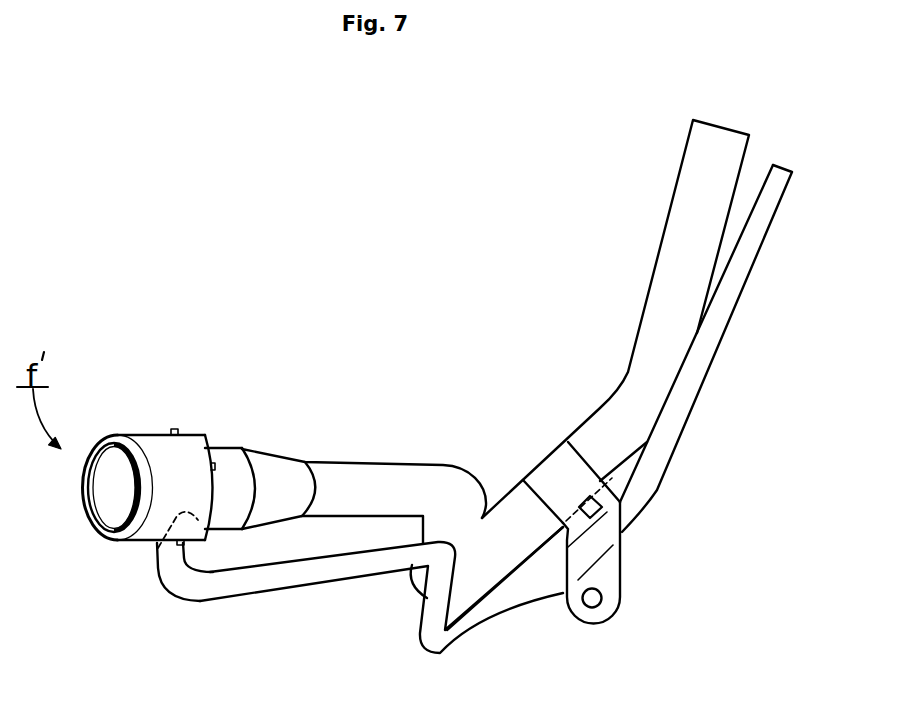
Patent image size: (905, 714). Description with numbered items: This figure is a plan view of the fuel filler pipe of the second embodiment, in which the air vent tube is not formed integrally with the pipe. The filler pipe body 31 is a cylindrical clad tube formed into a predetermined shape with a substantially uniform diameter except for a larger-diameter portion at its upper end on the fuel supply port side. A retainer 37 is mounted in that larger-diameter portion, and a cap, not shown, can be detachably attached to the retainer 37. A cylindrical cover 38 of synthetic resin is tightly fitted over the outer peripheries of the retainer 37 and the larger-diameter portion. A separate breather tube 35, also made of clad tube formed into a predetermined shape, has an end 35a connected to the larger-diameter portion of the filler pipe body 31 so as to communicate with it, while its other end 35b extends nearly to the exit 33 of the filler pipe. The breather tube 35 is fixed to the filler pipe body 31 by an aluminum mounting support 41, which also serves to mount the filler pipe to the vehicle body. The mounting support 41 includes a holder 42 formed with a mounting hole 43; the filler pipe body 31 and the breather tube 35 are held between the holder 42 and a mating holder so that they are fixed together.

The filler pipe body 31 is at (387, 477).
The exit 33 is at (718, 125).
The breather tube 35 is at (298, 573).
The end of breather tube 35a is at (163, 548).
The other end of breather tube 35b is at (778, 177).
The retainer 37 is at (110, 500).
The cylindrical cover 38 is at (182, 448).
The mounting support 41 is at (625, 559).
The holder 42 is at (614, 580).
The mounting hole 43 is at (597, 605).